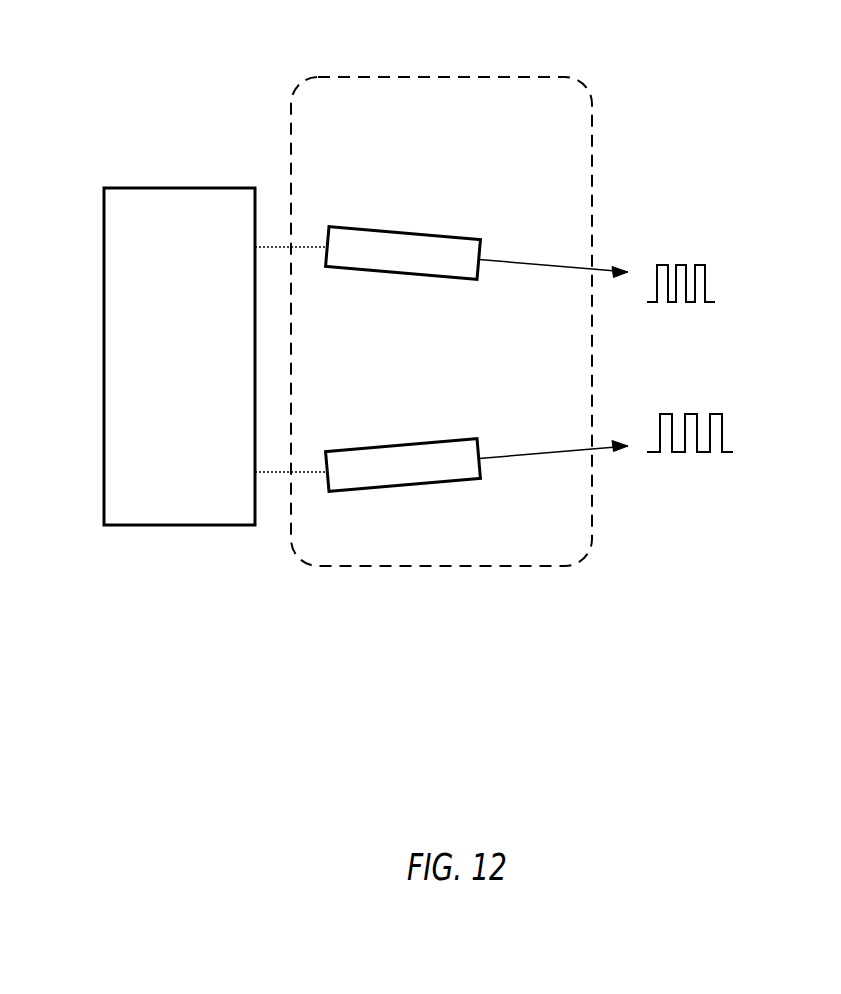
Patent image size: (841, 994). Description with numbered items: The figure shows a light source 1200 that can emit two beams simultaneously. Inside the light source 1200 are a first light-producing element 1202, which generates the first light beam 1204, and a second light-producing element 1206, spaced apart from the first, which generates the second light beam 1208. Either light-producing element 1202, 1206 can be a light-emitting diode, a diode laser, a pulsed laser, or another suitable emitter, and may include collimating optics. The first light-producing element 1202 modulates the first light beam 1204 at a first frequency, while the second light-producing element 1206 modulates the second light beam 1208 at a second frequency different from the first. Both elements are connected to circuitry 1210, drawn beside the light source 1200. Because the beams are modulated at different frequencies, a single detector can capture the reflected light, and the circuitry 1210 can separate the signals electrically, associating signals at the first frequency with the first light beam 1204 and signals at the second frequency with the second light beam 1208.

The light source 1200 is at (446, 76).
The first light-producing element 1202 is at (408, 232).
The first light beam 1204 is at (538, 262).
The second light-producing element 1206 is at (408, 446).
The second light beam 1208 is at (540, 448).
The circuitry 1210 is at (182, 187).